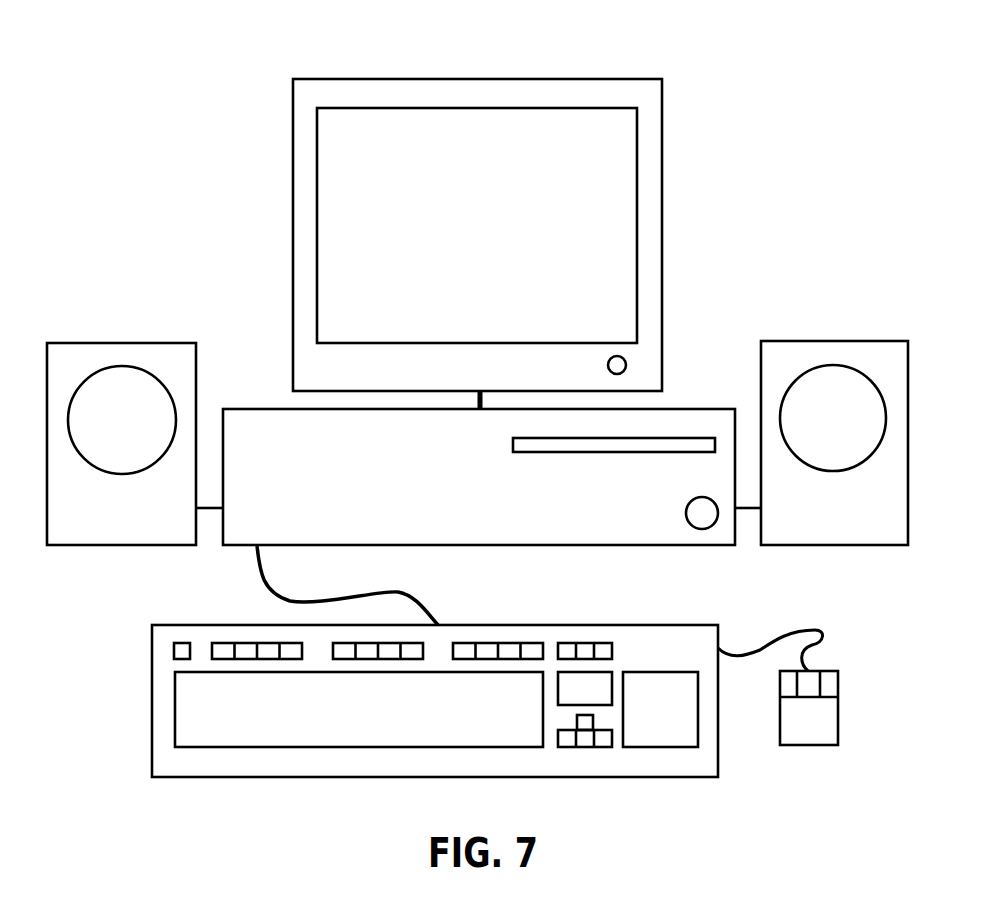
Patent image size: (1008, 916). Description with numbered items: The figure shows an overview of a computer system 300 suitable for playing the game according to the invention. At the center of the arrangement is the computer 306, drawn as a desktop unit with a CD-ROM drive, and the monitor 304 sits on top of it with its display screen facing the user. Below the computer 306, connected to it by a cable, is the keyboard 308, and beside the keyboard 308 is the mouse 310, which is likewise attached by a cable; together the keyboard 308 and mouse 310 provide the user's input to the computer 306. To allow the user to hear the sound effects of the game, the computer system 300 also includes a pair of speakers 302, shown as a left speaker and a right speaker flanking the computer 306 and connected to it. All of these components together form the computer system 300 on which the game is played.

The computer system 300 is at (758, 121).
The speakers 302 is at (98, 341).
The monitor 304 is at (475, 78).
The computer 306 is at (672, 409).
The keyboard 308 is at (640, 777).
The mouse 310 is at (838, 712).